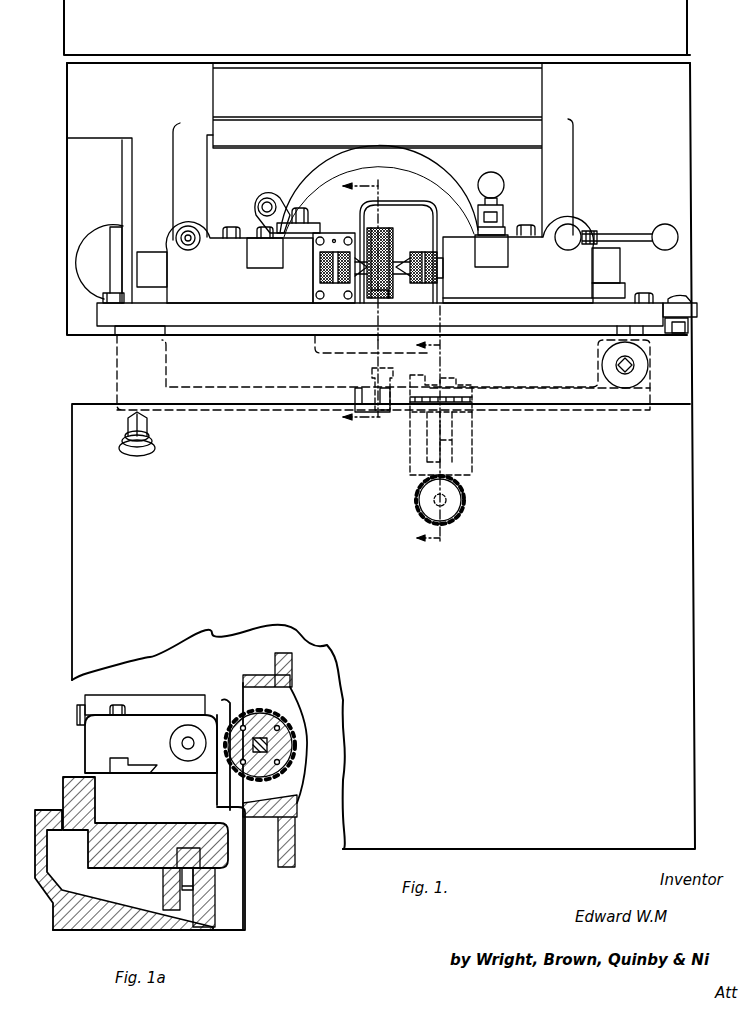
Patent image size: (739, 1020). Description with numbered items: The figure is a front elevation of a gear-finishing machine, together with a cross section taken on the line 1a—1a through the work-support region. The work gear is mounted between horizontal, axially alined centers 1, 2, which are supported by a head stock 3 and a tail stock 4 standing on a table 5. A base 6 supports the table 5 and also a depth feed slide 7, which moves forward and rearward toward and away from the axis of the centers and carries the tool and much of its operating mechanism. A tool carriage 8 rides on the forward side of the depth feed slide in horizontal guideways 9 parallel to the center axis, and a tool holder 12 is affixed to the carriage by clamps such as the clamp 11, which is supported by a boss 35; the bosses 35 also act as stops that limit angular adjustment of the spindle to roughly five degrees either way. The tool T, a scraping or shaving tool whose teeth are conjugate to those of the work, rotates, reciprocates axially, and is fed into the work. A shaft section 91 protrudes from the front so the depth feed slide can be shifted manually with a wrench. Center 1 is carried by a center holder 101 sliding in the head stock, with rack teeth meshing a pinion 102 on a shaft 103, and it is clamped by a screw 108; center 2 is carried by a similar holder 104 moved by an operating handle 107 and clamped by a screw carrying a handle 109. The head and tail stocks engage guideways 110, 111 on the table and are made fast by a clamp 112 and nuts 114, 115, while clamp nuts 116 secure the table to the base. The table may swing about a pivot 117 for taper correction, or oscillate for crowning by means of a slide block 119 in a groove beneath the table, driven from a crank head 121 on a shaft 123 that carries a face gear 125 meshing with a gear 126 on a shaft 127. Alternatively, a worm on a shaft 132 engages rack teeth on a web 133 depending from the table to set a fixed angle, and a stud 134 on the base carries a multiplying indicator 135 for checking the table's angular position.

In FIG. 1, the center 1 is at (360, 296).
In FIG. 1A, the center 1 is at (188, 743).
In FIG. 1, the section line 1a— 1a is at (361, 305).
In FIG. 1, the center 2 is at (398, 291).
In FIG. 1, the head stock 3 is at (221, 283).
In FIG. 1A, the head stock 3 is at (152, 696).
In FIG. 1, the tail stock 4 is at (545, 283).
In FIG. 1, the table 5 is at (282, 326).
In FIG. 1A, the table 5 is at (63, 790).
In FIG. 1, the base 6 is at (643, 593).
In FIG. 1A, the base 6 is at (55, 915).
In FIG. 1, the depth feed slide 7 is at (665, 118).
In FIG. 1, the tool carriage 8 is at (313, 155).
In FIG. 1, the guideways 9 is at (283, 116).
In FIG. 1, the clamp 11 is at (275, 195).
In FIG. 1, the tool holder 12 is at (429, 181).
In FIG. 1A, the tool holder 12 is at (265, 668).
In FIG. 1, the boss 35 is at (260, 200).
In FIG. 1, the shaft section 91 is at (149, 440).
In FIG. 1, the center holder 101 is at (152, 252).
In FIG. 1A, the pinion 102 is at (78, 718).
In FIG. 1, the shaft 103 is at (192, 222).
In FIG. 1, the center holder 104 is at (605, 256).
In FIG. 1, the operating handle 107 is at (668, 225).
In FIG. 1, the screw 108 is at (268, 236).
In FIG. 1, the handle 109 is at (497, 180).
In FIG. 1, the guideway 110 is at (152, 294).
In FIG. 1A, the guideway 110 is at (145, 767).
In FIG. 1, the guideway 111 is at (620, 290).
In FIG. 1A, the clamp 112 is at (113, 766).
In FIG. 1, the nut 114 is at (231, 227).
In FIG. 1A, the nut 114 is at (130, 684).
In FIG. 1, the nut 115 is at (524, 225).
In FIG. 1, the clamp nuts 116 is at (651, 294).
In FIG. 1, the pivot 117 is at (371, 376).
In FIG. 1A, the pivot 117 is at (200, 840).
In FIG. 1, the slide block 119 is at (476, 376).
In FIG. 1, the crank head 121 is at (402, 412).
In FIG. 1, the shaft 123 is at (460, 437).
In FIG. 1, the face gear 125 is at (470, 470).
In FIG. 1, the gear 126 is at (466, 500).
In FIG. 1, the shaft 127 is at (434, 502).
In FIG. 1, the shaft 132 is at (620, 372).
In FIG. 1, the web 133 is at (603, 342).
In FIG. 1, the stud 134 is at (678, 335).
In FIG. 1, the multiplying indicator 135 is at (697, 303).
In FIG. 1, the tool T is at (380, 228).
In FIG. 1A, the tool T is at (228, 722).